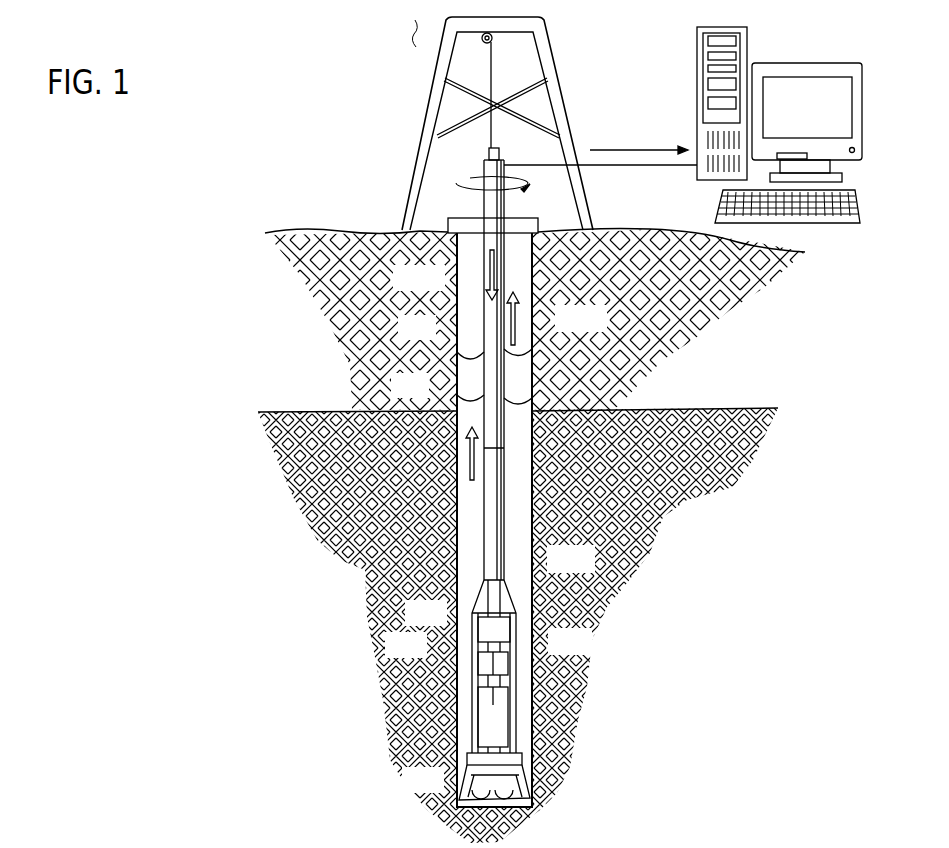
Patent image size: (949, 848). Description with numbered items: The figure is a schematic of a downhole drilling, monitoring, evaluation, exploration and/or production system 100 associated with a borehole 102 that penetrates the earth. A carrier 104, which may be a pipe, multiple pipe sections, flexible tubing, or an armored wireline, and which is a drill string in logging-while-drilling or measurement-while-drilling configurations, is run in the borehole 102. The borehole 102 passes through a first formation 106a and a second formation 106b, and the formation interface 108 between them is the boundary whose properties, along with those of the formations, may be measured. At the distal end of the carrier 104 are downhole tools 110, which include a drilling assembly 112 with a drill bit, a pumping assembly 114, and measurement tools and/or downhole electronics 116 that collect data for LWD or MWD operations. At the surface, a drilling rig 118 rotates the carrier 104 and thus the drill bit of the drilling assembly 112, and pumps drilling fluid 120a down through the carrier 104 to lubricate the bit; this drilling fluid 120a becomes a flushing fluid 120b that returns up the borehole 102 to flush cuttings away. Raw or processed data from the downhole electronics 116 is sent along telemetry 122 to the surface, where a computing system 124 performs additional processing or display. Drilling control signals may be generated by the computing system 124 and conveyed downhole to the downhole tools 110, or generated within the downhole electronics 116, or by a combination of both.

The downhole drilling, monitoring, evaluation, exploration, and/or production system 100 is at (358, 130).
The borehole 102 is at (457, 332).
The carrier 104 is at (457, 395).
The first formation 106a is at (535, 319).
The second formation 106b is at (518, 625).
The formation interface 108 is at (328, 410).
The downhole tools 110 is at (462, 651).
The drilling assembly 112 is at (468, 771).
The pumping assembly 114 is at (478, 630).
The measurement tools and/or downhole electronics 116 is at (508, 708).
The drilling rig 118 is at (576, 130).
The drilling fluid 120a is at (489, 281).
The flushing fluid 120b is at (535, 325).
The telemetry 122 is at (500, 545).
The computing system 124 is at (862, 132).